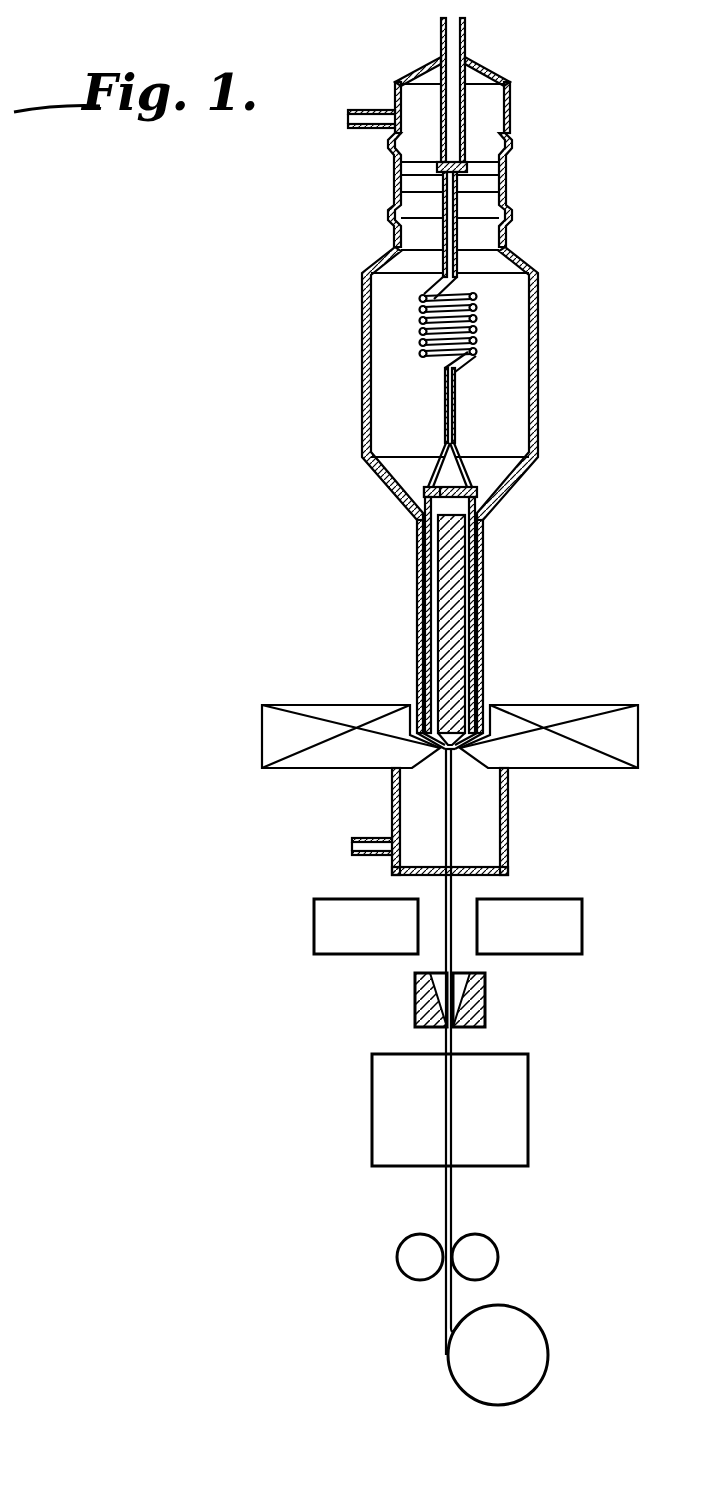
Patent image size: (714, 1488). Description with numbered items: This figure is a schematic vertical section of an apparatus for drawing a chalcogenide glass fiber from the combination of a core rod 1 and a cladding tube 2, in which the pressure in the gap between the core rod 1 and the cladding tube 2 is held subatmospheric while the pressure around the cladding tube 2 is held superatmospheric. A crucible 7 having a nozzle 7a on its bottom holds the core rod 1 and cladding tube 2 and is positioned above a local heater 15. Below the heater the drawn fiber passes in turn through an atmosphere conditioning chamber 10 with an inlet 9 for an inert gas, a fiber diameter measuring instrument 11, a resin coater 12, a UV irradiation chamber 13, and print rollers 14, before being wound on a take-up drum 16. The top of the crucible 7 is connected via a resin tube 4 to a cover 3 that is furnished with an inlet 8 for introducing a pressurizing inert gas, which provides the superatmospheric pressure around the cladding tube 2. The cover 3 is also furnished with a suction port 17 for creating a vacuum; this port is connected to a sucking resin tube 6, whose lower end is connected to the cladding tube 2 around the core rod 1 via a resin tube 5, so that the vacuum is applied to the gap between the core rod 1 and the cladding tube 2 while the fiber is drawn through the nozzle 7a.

The core rod 1 is at (452, 515).
The cladding tube 2 is at (470, 566).
The cover 3 is at (511, 86).
The resin tube 4 is at (512, 196).
The resin tube 5 is at (424, 490).
The sucking resin tube 6 is at (457, 393).
The crucible 7 is at (486, 640).
The nozzle 7a is at (457, 751).
The inlet 8 is at (344, 121).
The inlet 9 is at (352, 846).
The atmosphere conditioning chamber 10 is at (510, 873).
The fiber diameter measuring instrument 11 is at (582, 929).
The resin coater 12 is at (485, 1006).
The UV irradiation chamber 13 is at (528, 1114).
The print rollers 14 is at (498, 1253).
The local heater 15 is at (638, 737).
The take-up drum 16 is at (548, 1353).
The suction port 17 is at (455, 13).